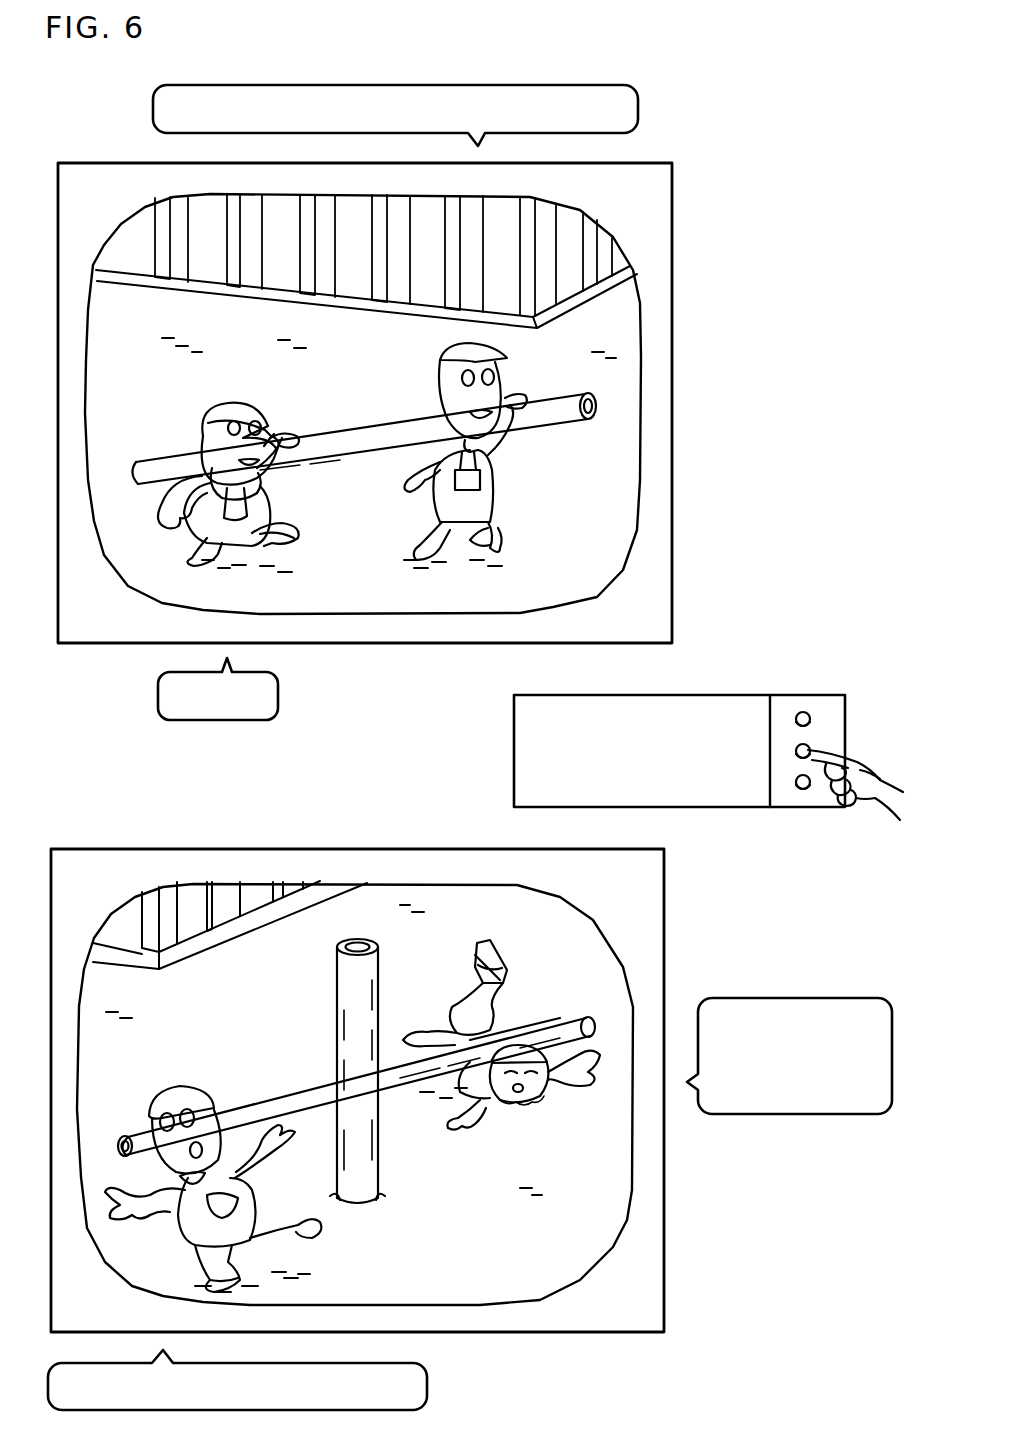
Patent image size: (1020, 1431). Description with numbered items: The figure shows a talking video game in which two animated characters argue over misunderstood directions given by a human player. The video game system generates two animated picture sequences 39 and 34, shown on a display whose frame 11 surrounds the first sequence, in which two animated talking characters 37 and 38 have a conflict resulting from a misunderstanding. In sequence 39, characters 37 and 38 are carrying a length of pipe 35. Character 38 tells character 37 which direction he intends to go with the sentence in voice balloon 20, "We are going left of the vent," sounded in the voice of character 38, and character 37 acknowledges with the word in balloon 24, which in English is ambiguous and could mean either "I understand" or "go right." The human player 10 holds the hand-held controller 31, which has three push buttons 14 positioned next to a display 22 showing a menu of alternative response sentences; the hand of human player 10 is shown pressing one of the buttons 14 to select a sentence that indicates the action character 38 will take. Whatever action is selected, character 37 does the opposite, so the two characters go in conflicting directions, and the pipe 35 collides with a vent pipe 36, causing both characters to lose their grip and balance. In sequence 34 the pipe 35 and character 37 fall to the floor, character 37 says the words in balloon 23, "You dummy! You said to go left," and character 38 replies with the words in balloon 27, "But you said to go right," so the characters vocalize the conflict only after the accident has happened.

The human player 10 is at (877, 782).
The display screen frame 11 is at (648, 218).
The push buttons 14 is at (803, 712).
The voice balloon 20 is at (639, 106).
The display 22 is at (712, 795).
The balloon 23 is at (786, 1010).
The balloon 24 is at (220, 712).
The balloon 27 is at (418, 1390).
The hand-held controller 31 is at (679, 735).
The animated picture sequence 34 is at (600, 1236).
The length of pipe 35 is at (364, 425).
The vent pipe 36 is at (345, 1013).
The animated talking character 37 is at (215, 420).
The animated talking character 38 is at (506, 540).
The animated picture sequence 39 is at (625, 462).